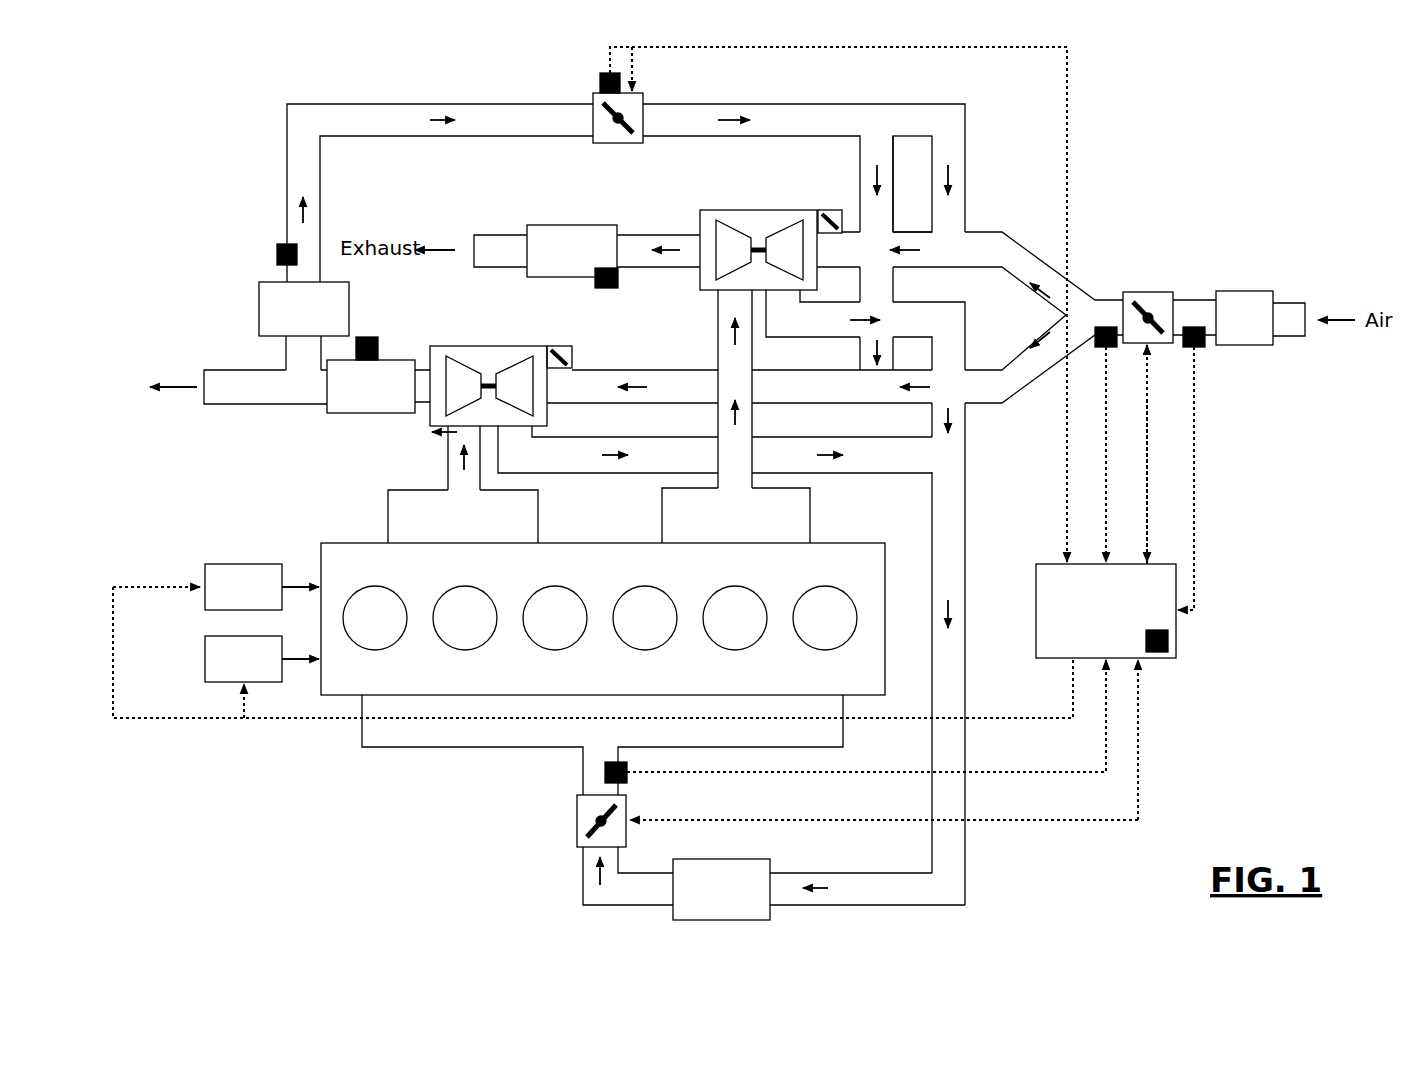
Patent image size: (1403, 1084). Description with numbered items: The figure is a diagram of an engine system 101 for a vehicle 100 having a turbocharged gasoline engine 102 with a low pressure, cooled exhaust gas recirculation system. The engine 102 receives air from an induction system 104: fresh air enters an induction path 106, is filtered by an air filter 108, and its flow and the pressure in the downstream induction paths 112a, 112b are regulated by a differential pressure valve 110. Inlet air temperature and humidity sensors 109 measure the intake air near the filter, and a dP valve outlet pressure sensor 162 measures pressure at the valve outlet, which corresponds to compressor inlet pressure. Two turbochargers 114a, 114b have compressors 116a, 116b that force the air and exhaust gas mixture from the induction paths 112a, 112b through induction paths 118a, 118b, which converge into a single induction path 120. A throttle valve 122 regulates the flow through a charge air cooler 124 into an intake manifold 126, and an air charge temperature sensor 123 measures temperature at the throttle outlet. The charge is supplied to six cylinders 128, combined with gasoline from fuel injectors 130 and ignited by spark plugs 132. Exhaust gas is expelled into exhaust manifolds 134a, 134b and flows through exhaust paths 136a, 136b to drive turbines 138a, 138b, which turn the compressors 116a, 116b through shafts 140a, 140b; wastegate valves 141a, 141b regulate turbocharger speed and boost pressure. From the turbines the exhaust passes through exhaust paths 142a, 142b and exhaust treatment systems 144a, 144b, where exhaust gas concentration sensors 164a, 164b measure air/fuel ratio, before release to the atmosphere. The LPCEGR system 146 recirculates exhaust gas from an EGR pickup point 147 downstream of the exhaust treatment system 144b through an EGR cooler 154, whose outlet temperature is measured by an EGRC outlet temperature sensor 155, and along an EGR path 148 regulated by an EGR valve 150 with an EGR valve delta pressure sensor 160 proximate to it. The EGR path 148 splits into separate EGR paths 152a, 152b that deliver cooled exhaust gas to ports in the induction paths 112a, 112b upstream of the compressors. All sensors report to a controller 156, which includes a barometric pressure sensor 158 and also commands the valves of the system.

The vehicle 100 is at (1172, 128).
The engine system 101 is at (300, 810).
The gasoline engine 102 is at (591, 594).
The induction system 104 is at (510, 918).
The induction path 106 is at (1290, 337).
The air filter 108 is at (1248, 291).
The inlet air temperature sensor 109 is at (1198, 348).
The differential pressure valve 110 is at (1175, 292).
The induction path 112a is at (965, 232).
The induction path 112b is at (990, 403).
The turbocharger 114a is at (696, 290).
The turbocharger 114b is at (432, 432).
The compressor 116a is at (820, 213).
The compressor 116b is at (517, 358).
The induction path 118a is at (965, 347).
The induction path 118b is at (852, 473).
The single induction path 120 is at (965, 557).
The throttle valve 122 is at (577, 820).
The air charge temperature sensor 123 is at (605, 773).
The charge air cooler 124 is at (722, 920).
The intake manifold 126 is at (440, 748).
The cylinders 128 is at (397, 641).
The fuel injectors 130 is at (205, 659).
The spark plugs 132 is at (243, 564).
The exhaust manifold 134a is at (662, 502).
The exhaust manifold 134b is at (540, 513).
The exhaust path 136a is at (716, 325).
The exhaust path 136b is at (482, 458).
The turbine 138a is at (746, 219).
The turbine 138b is at (477, 355).
The shaft 140a is at (758, 232).
The shaft 140b is at (487, 368).
The wastegate valve 141a is at (830, 235).
The wastegate valve 141b is at (572, 362).
The exhaust path 142a is at (497, 235).
The exhaust path 142b is at (215, 370).
The exhaust treatment system 144a is at (573, 225).
The exhaust treatment system 144b is at (335, 413).
The LPCEGR system 146 is at (247, 150).
The EGR pickup point 147 is at (303, 372).
The EGR path 148 is at (443, 103).
The EGR valve 150 is at (618, 143).
The EGR path 152a is at (965, 168).
The EGR path 152b is at (860, 165).
The EGR cooler 154 is at (259, 305).
The EGRC outlet temperature sensor 155 is at (277, 250).
The controller 156 is at (1036, 615).
The barometric pressure sensor 158 is at (1157, 652).
The EGR valve delta pressure sensor 160 is at (600, 78).
The dP valve outlet pressure sensor 162 is at (1107, 327).
The exhaust gas concentration sensor 164a is at (608, 288).
The exhaust gas concentration sensor 164b is at (368, 337).